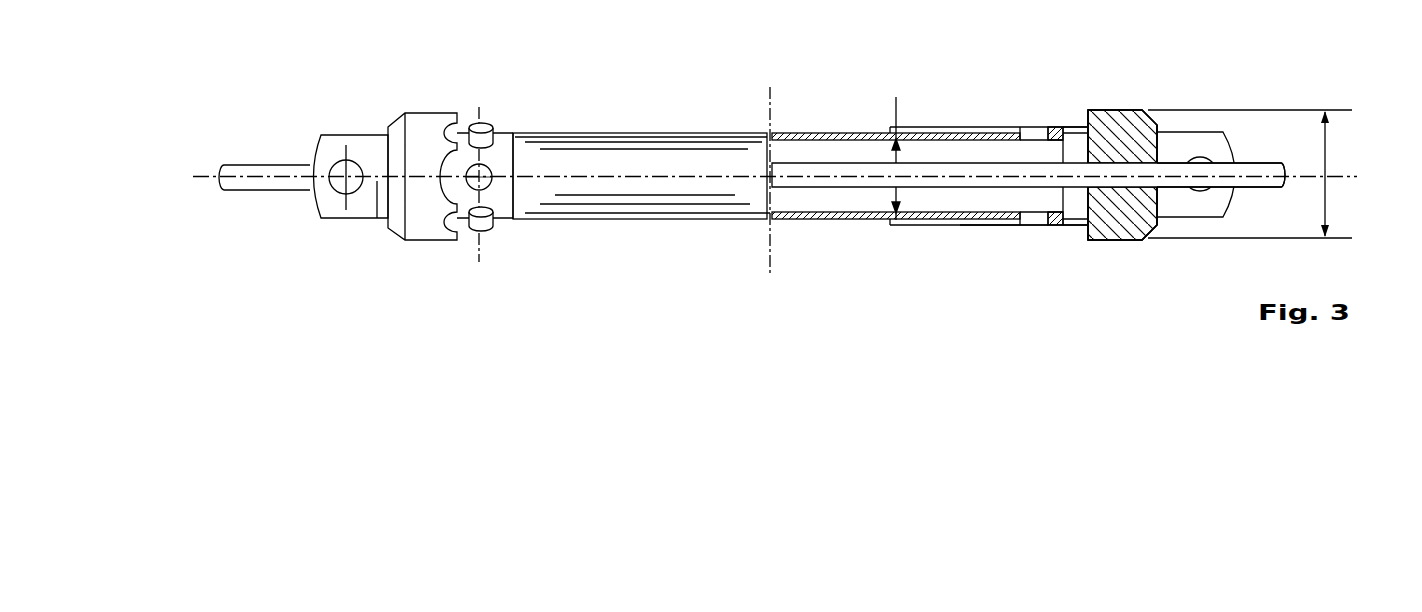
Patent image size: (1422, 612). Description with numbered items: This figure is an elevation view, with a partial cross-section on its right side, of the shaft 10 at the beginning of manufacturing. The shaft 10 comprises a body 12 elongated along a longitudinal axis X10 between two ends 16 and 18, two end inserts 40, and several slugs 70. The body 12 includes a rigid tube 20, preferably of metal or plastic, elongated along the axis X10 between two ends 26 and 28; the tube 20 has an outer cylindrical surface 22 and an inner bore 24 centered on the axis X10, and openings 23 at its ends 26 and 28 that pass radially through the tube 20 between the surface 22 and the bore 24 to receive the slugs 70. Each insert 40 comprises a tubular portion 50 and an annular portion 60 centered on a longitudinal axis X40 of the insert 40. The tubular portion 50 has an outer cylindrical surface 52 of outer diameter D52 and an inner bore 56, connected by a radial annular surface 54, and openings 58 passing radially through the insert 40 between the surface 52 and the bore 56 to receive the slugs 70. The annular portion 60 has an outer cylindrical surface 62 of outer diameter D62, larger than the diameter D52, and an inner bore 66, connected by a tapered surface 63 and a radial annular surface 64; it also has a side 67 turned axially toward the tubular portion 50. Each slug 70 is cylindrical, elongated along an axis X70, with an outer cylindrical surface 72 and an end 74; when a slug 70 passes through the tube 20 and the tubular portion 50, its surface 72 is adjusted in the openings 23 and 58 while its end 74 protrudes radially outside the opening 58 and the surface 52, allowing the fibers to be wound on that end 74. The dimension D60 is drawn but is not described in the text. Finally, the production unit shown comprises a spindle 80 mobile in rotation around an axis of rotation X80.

The shaft 10 is at (1216, 97).
The body 12 is at (662, 242).
The end 16 is at (472, 95).
The end 18 is at (1107, 90).
The tube 20 is at (822, 132).
The outer cylindrical surface 22 is at (810, 220).
The openings 23 is at (1021, 225).
The inner bore 24 is at (840, 205).
The end 26 is at (534, 232).
The end 28 is at (990, 229).
The end insert 40 is at (388, 124).
The tubular portion 50 is at (988, 112).
The outer cylindrical surface 52 is at (1037, 126).
The radial annular surface 54 is at (1022, 121).
The inner bore 56 is at (1072, 209).
The openings 58 is at (499, 133).
The annular portion 60 is at (1123, 233).
The outer cylindrical surface 62 is at (1131, 245).
The tapered surface 63 is at (1153, 236).
The radial annular surface 64 is at (1165, 229).
The inner bore 66 is at (1112, 176).
The side 67 is at (1086, 232).
The slug 70 is at (741, 203).
The outer cylindrical surface 72 is at (499, 220).
The end 74 is at (456, 242).
The spindle 80 is at (1268, 164).
The longitudinal axis X10 is at (230, 177).
The longitudinal axis of the insert X40 is at (375, 181).
The axis of the slug X70 is at (475, 197).
The axis of rotation X80 is at (800, 174).
The outer diameter D52 is at (901, 152).
The outer diameter D62 is at (1261, 174).
The diameter of nut assembly D60 is at (590, 12).